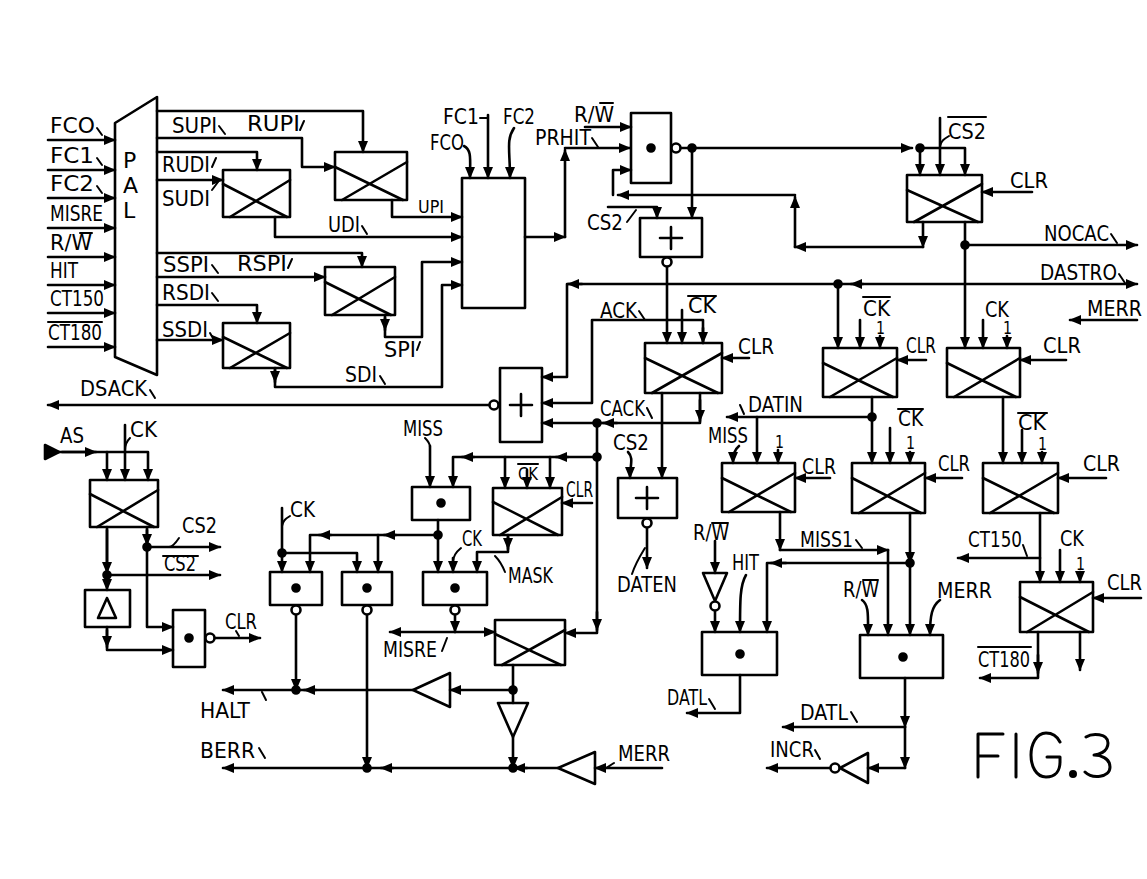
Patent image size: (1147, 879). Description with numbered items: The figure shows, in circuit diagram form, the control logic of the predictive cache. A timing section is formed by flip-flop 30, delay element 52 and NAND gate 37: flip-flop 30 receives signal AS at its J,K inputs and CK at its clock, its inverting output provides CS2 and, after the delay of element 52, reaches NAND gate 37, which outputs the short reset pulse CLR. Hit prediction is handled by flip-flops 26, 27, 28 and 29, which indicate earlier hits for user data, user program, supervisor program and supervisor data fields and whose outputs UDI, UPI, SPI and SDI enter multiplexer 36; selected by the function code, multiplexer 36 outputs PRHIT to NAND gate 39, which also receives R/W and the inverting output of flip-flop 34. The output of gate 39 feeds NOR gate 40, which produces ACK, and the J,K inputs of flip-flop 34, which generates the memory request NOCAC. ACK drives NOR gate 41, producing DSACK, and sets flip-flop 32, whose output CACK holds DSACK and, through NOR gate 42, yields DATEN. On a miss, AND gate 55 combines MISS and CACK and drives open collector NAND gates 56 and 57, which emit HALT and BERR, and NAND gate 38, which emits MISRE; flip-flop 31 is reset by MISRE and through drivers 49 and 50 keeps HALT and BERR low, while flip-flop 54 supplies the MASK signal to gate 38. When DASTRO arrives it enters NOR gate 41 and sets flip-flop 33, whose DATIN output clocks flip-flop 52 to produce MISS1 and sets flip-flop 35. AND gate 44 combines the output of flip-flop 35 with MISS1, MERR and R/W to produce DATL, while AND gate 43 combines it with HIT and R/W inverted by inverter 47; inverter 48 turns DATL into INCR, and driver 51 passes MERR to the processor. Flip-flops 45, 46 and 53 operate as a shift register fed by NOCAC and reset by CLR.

The JK flip-flop 26 is at (223, 217).
The JK flip-flop 27 is at (335, 191).
The JK flip-flop 28 is at (325, 305).
The JK flip-flop 29 is at (290, 345).
The JK flip-flop 30 is at (158, 491).
The JK flip-flop 31 is at (565, 653).
The JK flip-flop 32 is at (645, 375).
The JK flip-flop 33 is at (897, 380).
The JK flip-flop 34 is at (907, 206).
The JK flip-flop 35 is at (925, 497).
The multiplexer 36 is at (474, 309).
The NAND gate 37 is at (205, 655).
The NAND gate 38 is at (487, 592).
The NAND gate 39 is at (671, 126).
The NOR gate 40 is at (702, 238).
The NOR gate 41 is at (520, 368).
The NOR gate 42 is at (677, 493).
The AND gate 43 is at (702, 658).
The AND gate 44 is at (860, 656).
The JK flip-flop 45 is at (1020, 380).
The JK flip-flop 46 is at (1058, 497).
The inverter 47 is at (703, 588).
The inverter 48 is at (849, 762).
The open collector driver 49 is at (427, 710).
The open collector driver 50 is at (528, 720).
The open collector driver 51 is at (582, 758).
The delay element 52 is at (795, 497).
The JK flip-flop 53 is at (1093, 620).
The JK flip-flop 54 is at (562, 535).
The AND gate 55 is at (412, 500).
The open collector NAND gate 56 is at (304, 613).
The open collector NAND gate 57 is at (392, 572).